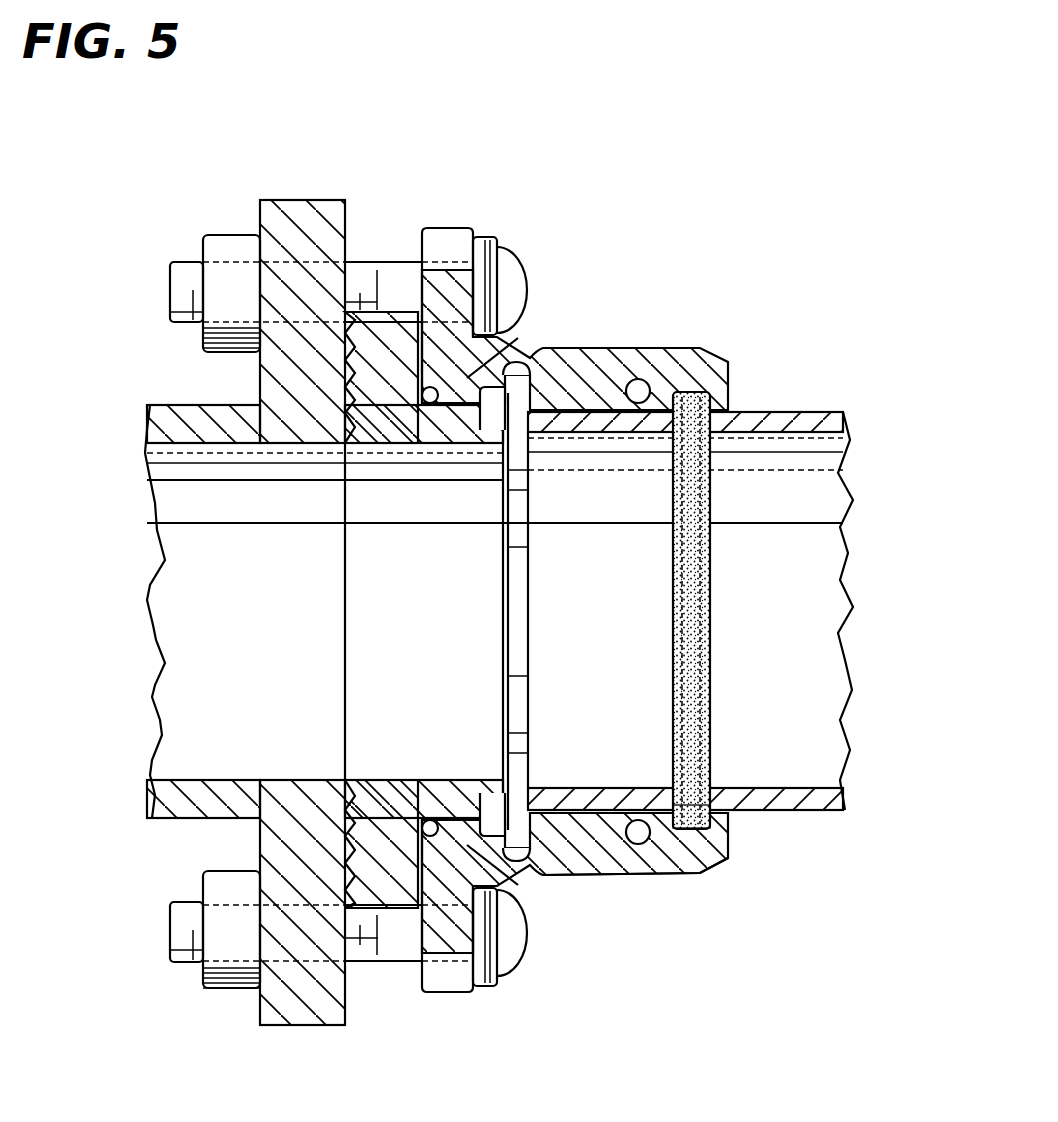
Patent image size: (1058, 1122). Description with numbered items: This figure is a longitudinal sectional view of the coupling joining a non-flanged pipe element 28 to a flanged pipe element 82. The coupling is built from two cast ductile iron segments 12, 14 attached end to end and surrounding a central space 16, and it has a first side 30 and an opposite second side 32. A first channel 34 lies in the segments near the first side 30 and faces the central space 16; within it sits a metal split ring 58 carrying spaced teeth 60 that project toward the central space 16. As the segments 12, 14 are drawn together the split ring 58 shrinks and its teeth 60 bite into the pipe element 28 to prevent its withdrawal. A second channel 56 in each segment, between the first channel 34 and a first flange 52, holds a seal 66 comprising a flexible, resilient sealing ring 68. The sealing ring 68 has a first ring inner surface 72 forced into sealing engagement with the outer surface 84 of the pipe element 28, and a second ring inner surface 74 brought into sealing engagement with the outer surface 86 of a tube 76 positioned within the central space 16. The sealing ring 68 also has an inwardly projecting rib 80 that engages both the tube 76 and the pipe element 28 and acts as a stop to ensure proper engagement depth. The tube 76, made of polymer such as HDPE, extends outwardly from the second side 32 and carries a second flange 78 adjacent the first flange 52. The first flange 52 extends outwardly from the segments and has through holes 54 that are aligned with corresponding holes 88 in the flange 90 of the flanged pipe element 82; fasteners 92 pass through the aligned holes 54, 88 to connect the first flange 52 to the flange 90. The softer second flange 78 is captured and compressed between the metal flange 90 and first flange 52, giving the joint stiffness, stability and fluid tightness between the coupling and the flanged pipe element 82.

The segment 12 is at (700, 373).
The segment 14 is at (645, 863).
The central space 16 is at (436, 604).
The pipe element 28 is at (840, 812).
The first side 30 is at (733, 400).
The second side 32 is at (357, 800).
The first channel 34 is at (693, 833).
The first flange 52 is at (455, 970).
The through holes 54 is at (447, 238).
The second channel 56 is at (562, 847).
The split ring 58 is at (688, 664).
The teeth 60 is at (703, 550).
The seal 66 is at (589, 342).
The sealing ring 68 is at (505, 396).
The first ring inner surface 72 is at (640, 367).
The second ring inner surface 74 is at (477, 397).
The tube 76 is at (370, 410).
The second flange 78 is at (320, 820).
The rib 80 is at (502, 757).
The flanged pipe element 82 is at (175, 800).
The outer surface 84 is at (822, 410).
The outer surface 86 is at (420, 395).
The holes 88 is at (308, 258).
The flange 90 is at (273, 198).
The fasteners 92 is at (387, 260).